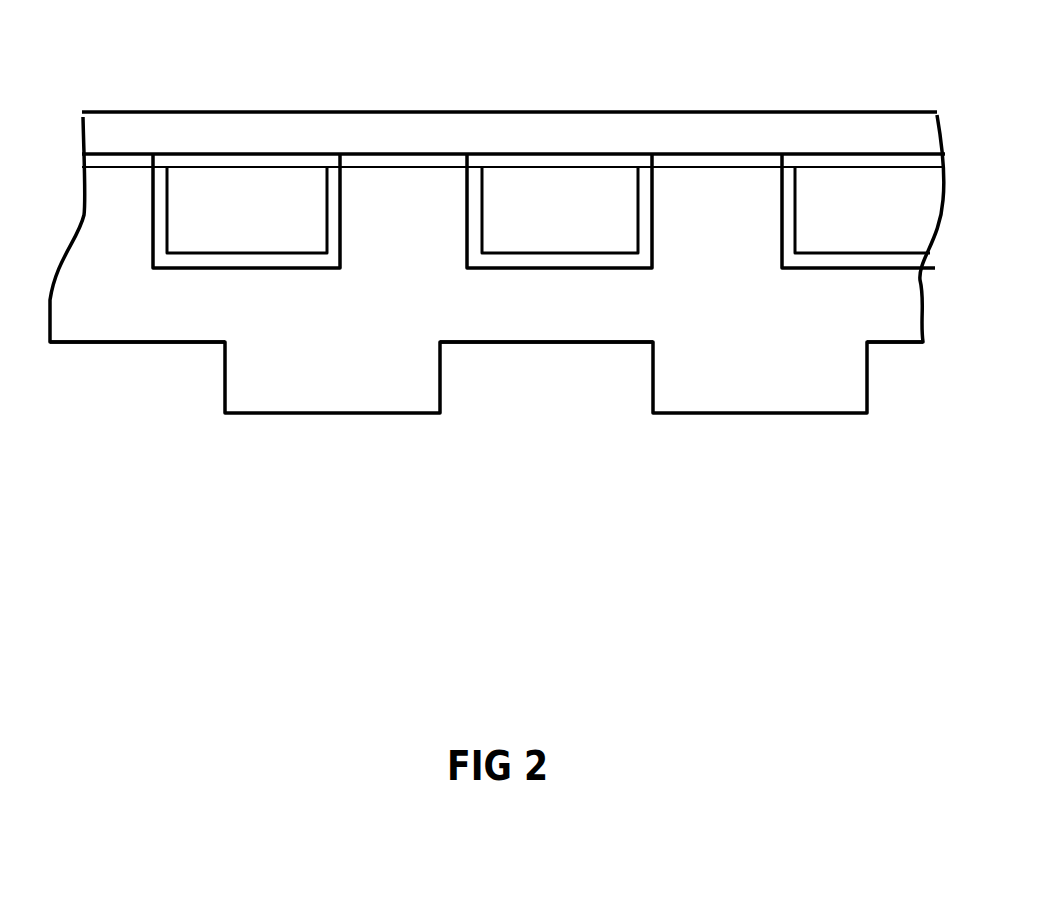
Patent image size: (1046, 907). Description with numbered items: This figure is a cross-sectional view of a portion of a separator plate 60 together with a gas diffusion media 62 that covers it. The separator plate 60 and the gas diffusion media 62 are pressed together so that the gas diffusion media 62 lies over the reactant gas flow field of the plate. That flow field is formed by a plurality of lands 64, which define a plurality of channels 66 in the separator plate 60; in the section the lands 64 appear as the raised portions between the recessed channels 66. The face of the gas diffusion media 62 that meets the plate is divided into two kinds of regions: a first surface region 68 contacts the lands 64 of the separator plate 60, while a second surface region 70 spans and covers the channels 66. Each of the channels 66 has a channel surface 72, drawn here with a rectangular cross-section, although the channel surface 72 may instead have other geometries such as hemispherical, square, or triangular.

The separator plate 60 is at (180, 305).
The gas diffusion media 62 is at (188, 127).
The lands 64 is at (100, 215).
The channels 66 is at (232, 230).
The first surface region 68 is at (112, 162).
The second surface region 70 is at (255, 160).
The channel surface 72 is at (318, 262).